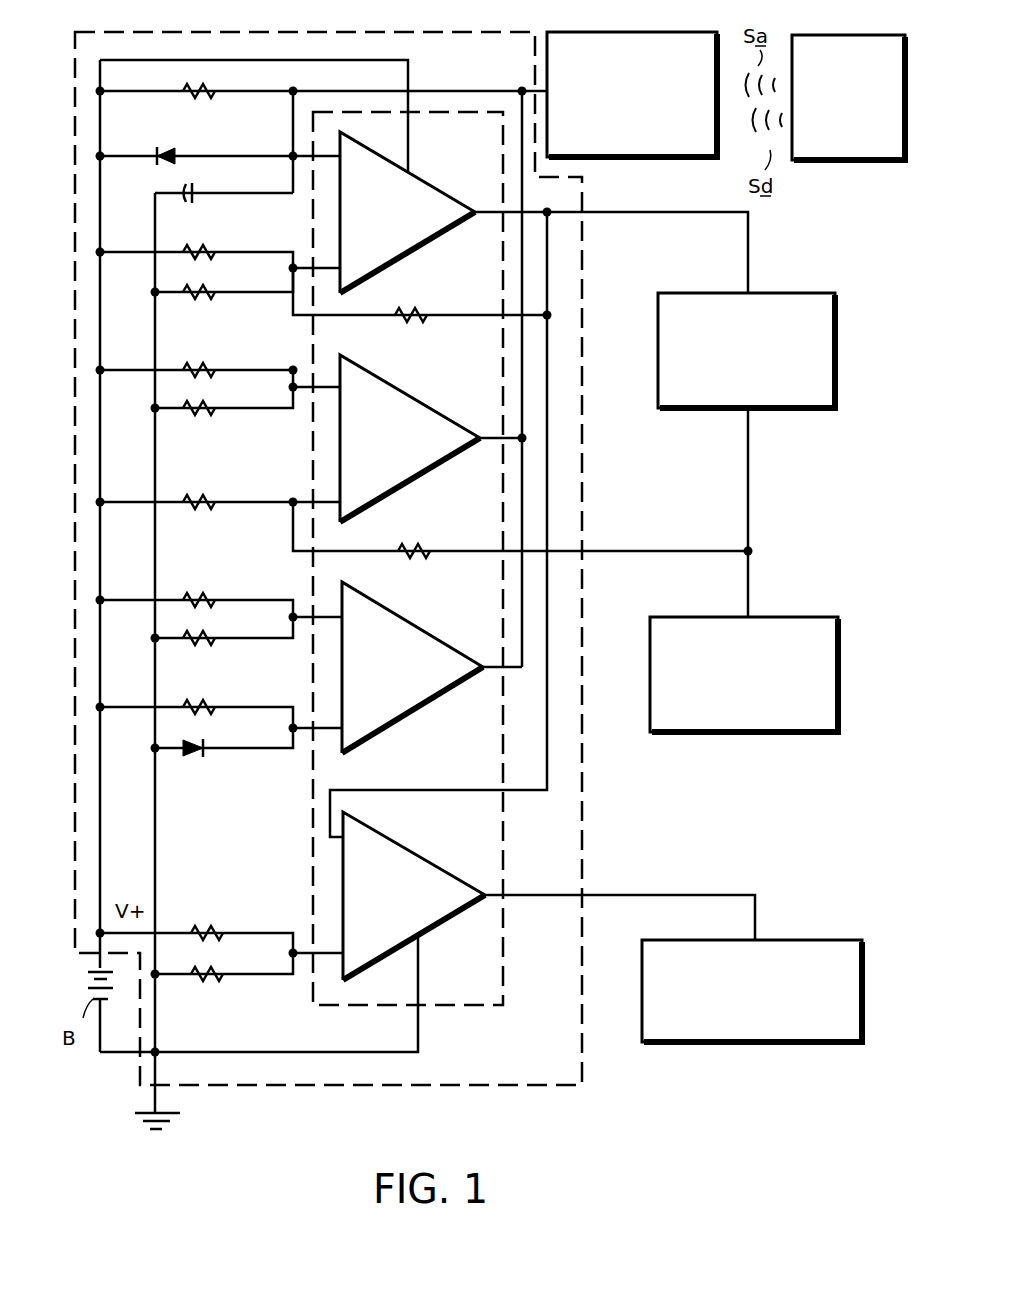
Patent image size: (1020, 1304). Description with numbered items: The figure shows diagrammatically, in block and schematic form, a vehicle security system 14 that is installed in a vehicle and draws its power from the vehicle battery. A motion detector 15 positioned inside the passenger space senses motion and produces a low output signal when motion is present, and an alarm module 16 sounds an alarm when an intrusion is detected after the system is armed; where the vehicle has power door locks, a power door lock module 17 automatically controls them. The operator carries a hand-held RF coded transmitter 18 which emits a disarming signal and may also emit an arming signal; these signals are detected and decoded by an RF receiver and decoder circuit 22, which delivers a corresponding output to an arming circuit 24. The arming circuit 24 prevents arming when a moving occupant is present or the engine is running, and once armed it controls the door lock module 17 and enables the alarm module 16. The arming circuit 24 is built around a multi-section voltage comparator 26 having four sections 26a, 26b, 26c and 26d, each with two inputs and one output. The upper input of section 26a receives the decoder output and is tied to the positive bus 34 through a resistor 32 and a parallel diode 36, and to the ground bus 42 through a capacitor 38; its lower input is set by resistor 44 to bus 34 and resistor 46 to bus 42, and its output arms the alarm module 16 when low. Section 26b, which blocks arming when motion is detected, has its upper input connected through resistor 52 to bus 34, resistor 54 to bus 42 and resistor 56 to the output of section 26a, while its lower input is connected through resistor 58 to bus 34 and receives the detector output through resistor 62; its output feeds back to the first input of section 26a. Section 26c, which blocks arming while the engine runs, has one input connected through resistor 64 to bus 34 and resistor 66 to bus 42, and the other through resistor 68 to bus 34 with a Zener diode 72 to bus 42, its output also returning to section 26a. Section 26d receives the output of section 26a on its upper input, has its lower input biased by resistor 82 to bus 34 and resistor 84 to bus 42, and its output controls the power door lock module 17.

The vehicle security system 14 is at (640, 1128).
The motion detector 15 is at (838, 672).
The alarm module 16 is at (782, 290).
The power door lock module 17 is at (798, 940).
The RF coded transmitter 18 is at (842, 162).
The RF receiver and decoder circuit 22 is at (640, 158).
The arming circuit 24 is at (74, 82).
The multi-section voltage comparator 26 is at (440, 112).
The first comparator section 26a is at (438, 242).
The second comparator section 26b is at (410, 480).
The third comparator section 26c is at (400, 722).
The fourth comparator section 26d is at (445, 920).
The resistor 32 is at (212, 97).
The bus 34 is at (104, 225).
The diode 36 is at (160, 146).
The capacitor 38 is at (196, 192).
The bus 42 is at (152, 338).
The resistor 44 is at (214, 249).
The second resistor 46 is at (214, 291).
The resistor 52 is at (205, 368).
The second resistor 54 is at (220, 412).
The resistor 56 is at (412, 322).
The resistor 58 is at (213, 500).
The resistor 62 is at (415, 555).
The resistor 64 is at (198, 598).
The second resistor 66 is at (212, 640).
The resistor 68 is at (200, 705).
The Zener diode 72 is at (203, 752).
The resistor 82 is at (207, 930).
The second resistor 84 is at (212, 977).